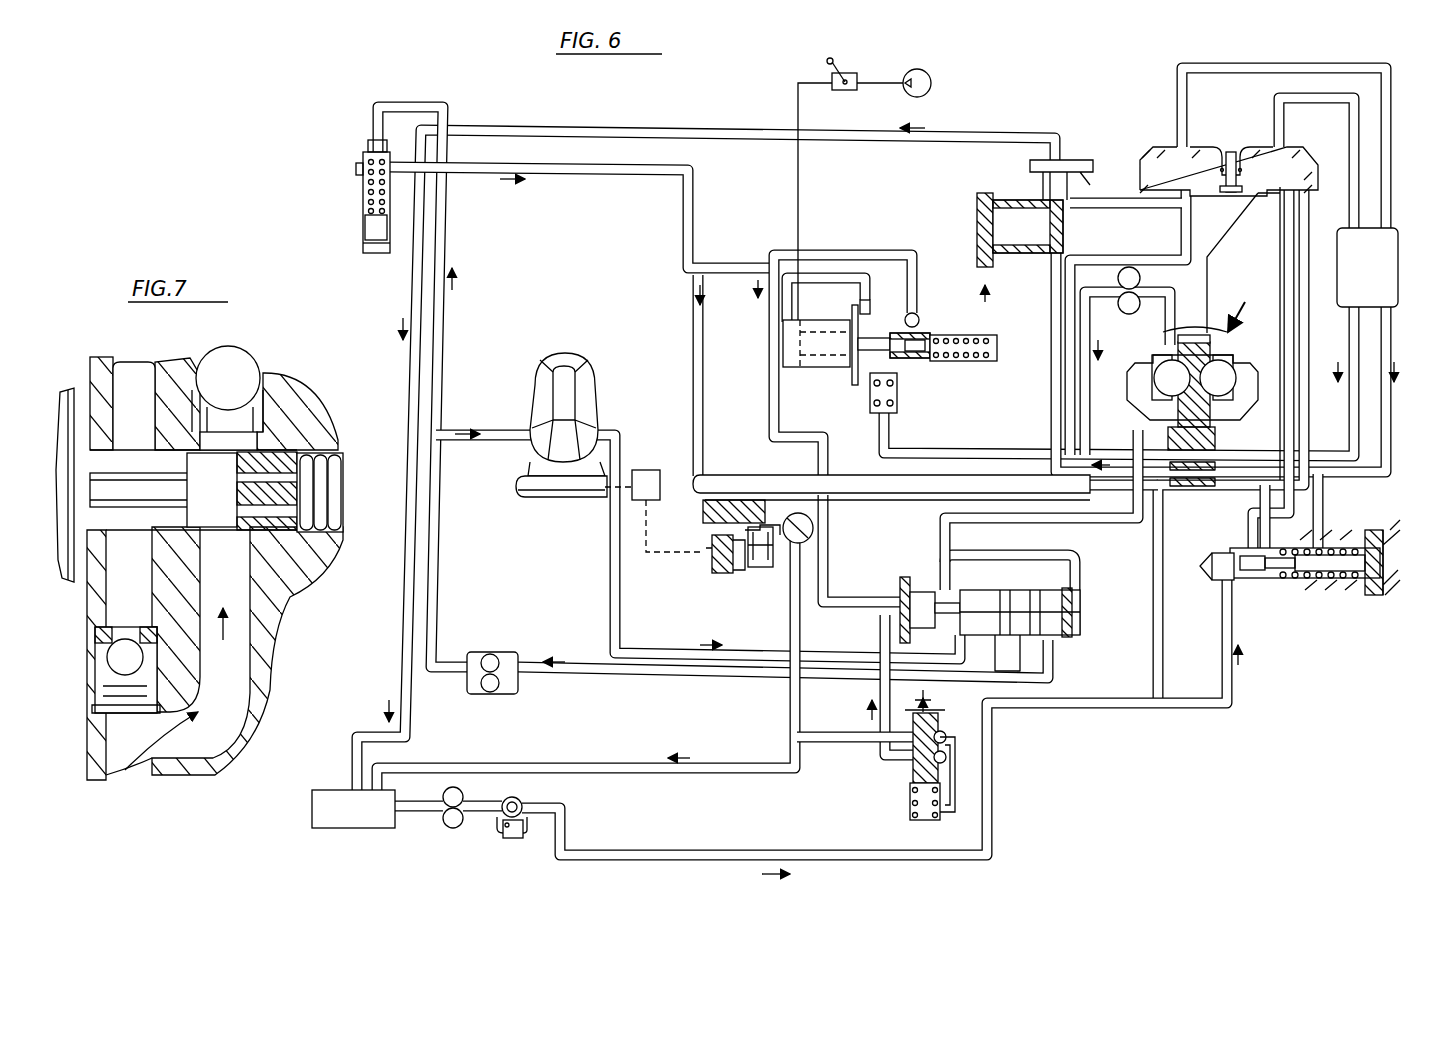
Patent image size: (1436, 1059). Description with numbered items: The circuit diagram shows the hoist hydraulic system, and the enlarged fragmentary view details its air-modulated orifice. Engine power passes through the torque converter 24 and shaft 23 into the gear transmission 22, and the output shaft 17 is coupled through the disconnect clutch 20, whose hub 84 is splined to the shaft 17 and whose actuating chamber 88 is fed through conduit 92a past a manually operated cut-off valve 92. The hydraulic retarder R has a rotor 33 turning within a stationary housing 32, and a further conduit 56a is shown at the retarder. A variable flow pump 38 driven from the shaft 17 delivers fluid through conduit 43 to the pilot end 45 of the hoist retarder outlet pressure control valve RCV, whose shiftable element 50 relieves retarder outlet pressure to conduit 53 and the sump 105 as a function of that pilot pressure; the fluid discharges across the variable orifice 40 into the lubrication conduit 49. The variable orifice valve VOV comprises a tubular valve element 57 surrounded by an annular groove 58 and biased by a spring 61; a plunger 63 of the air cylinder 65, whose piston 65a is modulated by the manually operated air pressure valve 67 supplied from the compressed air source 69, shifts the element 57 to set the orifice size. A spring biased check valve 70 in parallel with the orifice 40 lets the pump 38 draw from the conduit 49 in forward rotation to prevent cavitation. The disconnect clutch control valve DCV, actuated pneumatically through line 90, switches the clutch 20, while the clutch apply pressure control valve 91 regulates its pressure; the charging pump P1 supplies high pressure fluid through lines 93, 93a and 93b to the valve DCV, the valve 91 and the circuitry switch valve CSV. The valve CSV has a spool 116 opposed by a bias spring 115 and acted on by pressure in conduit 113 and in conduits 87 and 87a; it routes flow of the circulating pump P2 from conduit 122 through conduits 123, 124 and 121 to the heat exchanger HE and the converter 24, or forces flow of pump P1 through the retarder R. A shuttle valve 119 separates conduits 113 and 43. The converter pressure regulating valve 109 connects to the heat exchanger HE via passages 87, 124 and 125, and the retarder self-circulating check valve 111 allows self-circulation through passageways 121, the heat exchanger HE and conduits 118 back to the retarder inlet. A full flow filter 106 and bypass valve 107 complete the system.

In FIG. 6, the output shaft 17 is at (786, 463).
In FIG. 6, the disconnect clutch 20 is at (700, 565).
In FIG. 6, the gear transmission 22 is at (646, 468).
In FIG. 6, the shaft 23 is at (570, 498).
In FIG. 6, the torque converter 24 is at (590, 368).
In FIG. 6, the stationary housing 32 is at (1240, 352).
In FIG. 6, the rotor 33 is at (1204, 444).
In FIG. 6, the variable flow fluid pump 38 is at (1141, 278).
In FIG. 6, the variable orifice 40 is at (872, 300).
In FIG. 7, the variable orifice 40 is at (206, 484).
In FIG. 6, the conduit 43 is at (896, 436).
In FIG. 7, the conduit 43 is at (236, 710).
In FIG. 6, the pilot end 45 is at (975, 202).
In FIG. 6, the lubrication conduit 49 is at (696, 200).
In FIG. 6, the shiftable element 50 is at (1030, 195).
In FIG. 6, the conduit 53 is at (1032, 136).
In FIG. 6, the line 56a is at (1312, 350).
In FIG. 6, the valve element 57 is at (925, 358).
In FIG. 7, the valve element 57 is at (262, 448).
In FIG. 6, the annular groove 58 is at (918, 332).
In FIG. 7, the annular groove 58 is at (290, 590).
In FIG. 6, the spring 61 is at (985, 338).
In FIG. 7, the spring 61 is at (341, 492).
In FIG. 6, the plunger 63 is at (870, 352).
In FIG. 7, the plunger 63 is at (158, 496).
In FIG. 6, the variable pressure air cylinder 65 is at (822, 318).
In FIG. 7, the variable pressure air cylinder 65 is at (64, 386).
In FIG. 6, the piston 65a is at (850, 375).
In FIG. 6, the air pressure valve 67 is at (848, 68).
In FIG. 6, the compressed air source 69 is at (922, 68).
In FIG. 6, the spring biased check valve 70 is at (872, 395).
In FIG. 7, the spring biased check valve 70 is at (108, 660).
In FIG. 7, the hub 84 is at (136, 362).
In FIG. 6, the conduit 87 is at (940, 518).
In FIG. 6, the conduit 87a is at (1155, 512).
In FIG. 6, the actuating chamber 88 is at (762, 571).
In FIG. 6, the pneumatic line 90 is at (932, 703).
In FIG. 6, the clutch apply pressure control valve 91 is at (1320, 580).
In FIG. 6, the cut-off valve 92 is at (812, 524).
In FIG. 6, the conduit 92a is at (758, 567).
In FIG. 6, the line 93 is at (985, 834).
In FIG. 6, the line 93a is at (1075, 707).
In FIG. 6, the line 93b is at (1017, 655).
In FIG. 6, the sump 105 is at (336, 822).
In FIG. 6, the full flow filter 106 is at (520, 800).
In FIG. 6, the bypass valve 107 is at (512, 838).
In FIG. 6, the converter pressure regulating valve 109 is at (356, 183).
In FIG. 6, the retarder self-circulating check valve 111 is at (1250, 182).
In FIG. 6, the conduit 113 is at (770, 388).
In FIG. 6, the bias spring 115 is at (1082, 623).
In FIG. 6, the valve spool 116 is at (1020, 612).
In FIG. 6, the conduits 118 is at (1362, 406).
In FIG. 6, the shuttle valve 119 is at (915, 315).
In FIG. 7, the shuttle valve 119 is at (240, 372).
In FIG. 6, the passageways 121 is at (1222, 80).
In FIG. 6, the conduit 122 is at (622, 676).
In FIG. 6, the conduit 123 is at (1162, 646).
In FIG. 6, the conduit 124 is at (660, 654).
In FIG. 6, the passage 125 is at (442, 332).
In FIG. 6, the charging pump P1 is at (446, 825).
In FIG. 6, the circulating pump P2 is at (495, 652).
In FIG. 6, the heat exchanger HE is at (1386, 278).
In FIG. 6, the hoist retarder outlet pressure control valve RCV is at (975, 192).
In FIG. 6, the circuitry switch valve CSV is at (928, 578).
In FIG. 6, the disconnect clutch control valve DCV is at (910, 783).
In FIG. 6, the variable orifice valve VOV is at (928, 362).
In FIG. 7, the variable orifice valve VOV is at (300, 440).
In FIG. 6, the hydraulic retarder R is at (1243, 333).